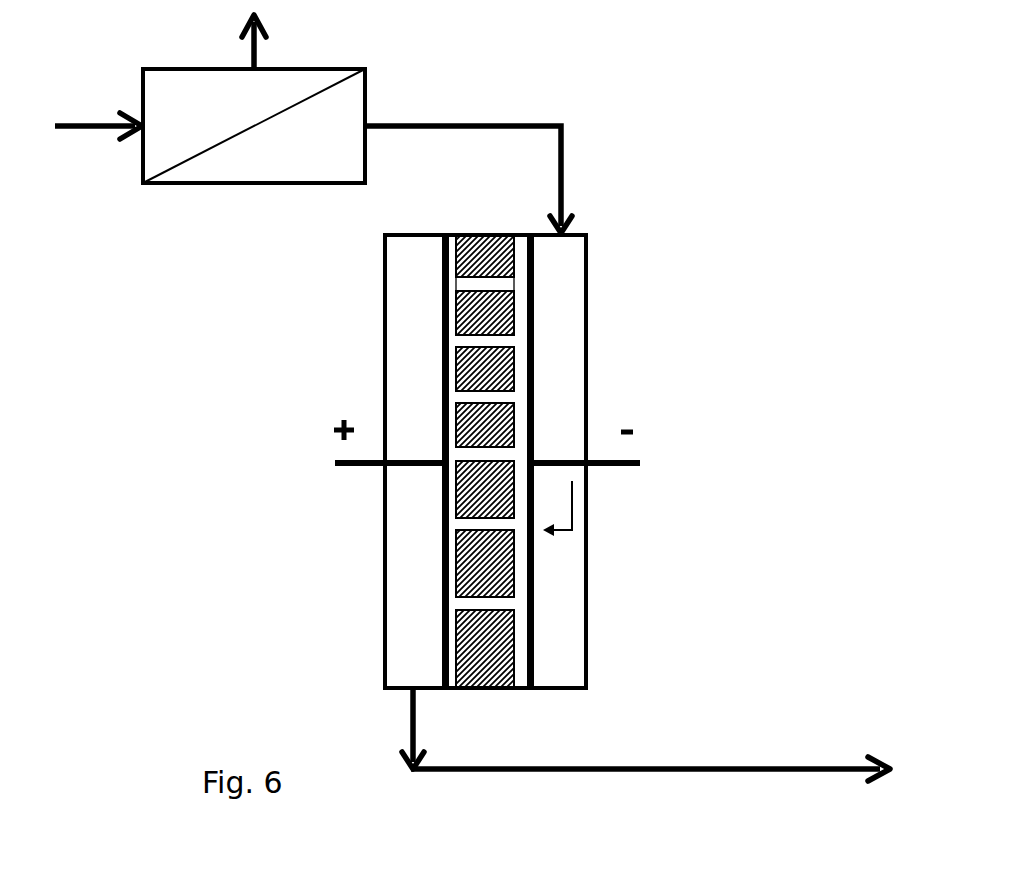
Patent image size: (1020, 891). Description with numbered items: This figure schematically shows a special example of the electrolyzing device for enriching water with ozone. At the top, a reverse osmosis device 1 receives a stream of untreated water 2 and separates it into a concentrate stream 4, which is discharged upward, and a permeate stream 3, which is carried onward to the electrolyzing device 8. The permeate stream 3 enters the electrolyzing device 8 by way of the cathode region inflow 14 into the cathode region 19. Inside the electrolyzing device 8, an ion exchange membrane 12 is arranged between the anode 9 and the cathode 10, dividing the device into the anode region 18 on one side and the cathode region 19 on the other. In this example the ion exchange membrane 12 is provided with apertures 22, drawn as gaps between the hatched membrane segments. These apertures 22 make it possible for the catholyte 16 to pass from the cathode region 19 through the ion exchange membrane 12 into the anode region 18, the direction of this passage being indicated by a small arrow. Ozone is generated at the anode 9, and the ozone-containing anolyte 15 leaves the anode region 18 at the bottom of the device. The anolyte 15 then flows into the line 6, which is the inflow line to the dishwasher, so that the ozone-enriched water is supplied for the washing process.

The reverse osmosis device 1 is at (170, 53).
The stream of untreated water 2 is at (97, 142).
The permeate stream 3 is at (445, 122).
The concentrate stream 4 is at (263, 53).
The line 6 is at (682, 772).
The electrolyzing device 8 is at (383, 316).
The anode 9 is at (441, 428).
The cathode 10 is at (536, 436).
The ion exchange membrane 12 is at (507, 638).
The cathode region inflow 14 is at (563, 178).
The anolyte 15 is at (410, 730).
The catholyte 16 is at (581, 504).
The anode region 18 is at (411, 574).
The cathode region 19 is at (573, 554).
The apertures 22 is at (518, 283).